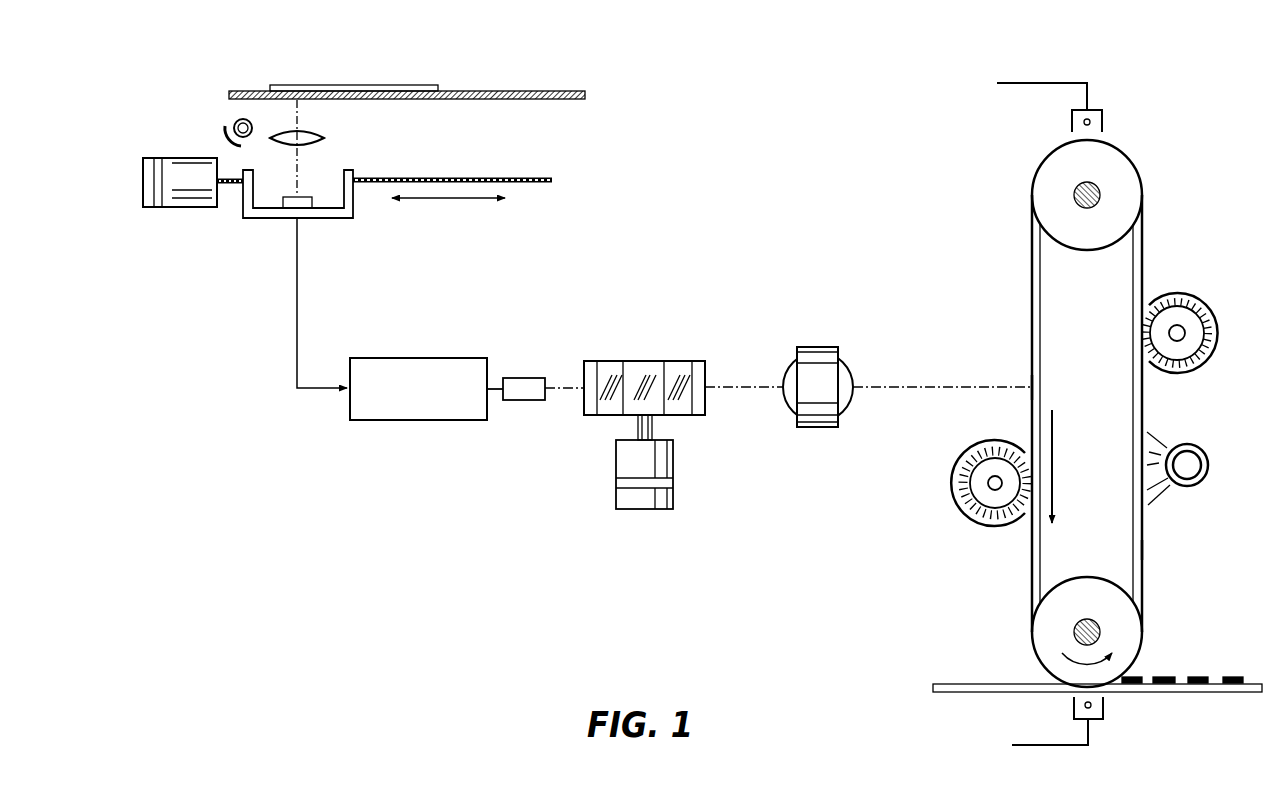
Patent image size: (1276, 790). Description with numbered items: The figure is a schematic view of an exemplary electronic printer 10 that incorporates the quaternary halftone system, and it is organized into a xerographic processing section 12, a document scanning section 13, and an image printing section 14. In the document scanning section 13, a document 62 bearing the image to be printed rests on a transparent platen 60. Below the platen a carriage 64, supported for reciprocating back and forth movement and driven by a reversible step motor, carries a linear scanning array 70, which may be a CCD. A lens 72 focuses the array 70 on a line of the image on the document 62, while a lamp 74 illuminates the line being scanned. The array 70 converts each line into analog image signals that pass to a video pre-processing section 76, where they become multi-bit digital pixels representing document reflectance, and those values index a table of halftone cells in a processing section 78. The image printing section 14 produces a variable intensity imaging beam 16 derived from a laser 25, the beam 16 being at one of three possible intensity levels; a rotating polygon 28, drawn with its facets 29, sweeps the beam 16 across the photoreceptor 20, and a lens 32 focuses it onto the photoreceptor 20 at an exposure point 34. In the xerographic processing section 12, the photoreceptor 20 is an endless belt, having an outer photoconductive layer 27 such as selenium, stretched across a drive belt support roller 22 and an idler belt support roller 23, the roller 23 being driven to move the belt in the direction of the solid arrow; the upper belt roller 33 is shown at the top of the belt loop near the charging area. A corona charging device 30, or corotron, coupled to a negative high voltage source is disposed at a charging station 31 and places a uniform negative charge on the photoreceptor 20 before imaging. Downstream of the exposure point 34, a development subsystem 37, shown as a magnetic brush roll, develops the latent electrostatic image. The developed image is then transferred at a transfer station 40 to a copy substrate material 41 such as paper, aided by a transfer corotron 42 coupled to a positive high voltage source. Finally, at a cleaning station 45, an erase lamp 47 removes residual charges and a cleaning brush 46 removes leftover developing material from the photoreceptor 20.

The electronic printer 10 is at (790, 93).
The xerographic processing section 12 is at (1023, 258).
The document scanning section 13 is at (492, 78).
The image printing section 14 is at (663, 305).
The imaging beam 16 is at (930, 385).
The photoreceptor 20 is at (1152, 220).
The drive belt support roller 22 is at (1087, 247).
The idler belt support roller 23 is at (1083, 578).
The laser 25 is at (528, 378).
The photoconductive layer 27 is at (1140, 552).
The rotating polygon 28 is at (628, 360).
The filters 29 is at (653, 365).
The corona charging device 30 is at (1095, 107).
The charging station 31 is at (1117, 112).
The lens 32 is at (817, 347).
The upper roller 33 is at (1065, 216).
The exposure point 34 is at (1030, 386).
The development subsystem 37 is at (953, 470).
The transfer station 40 is at (1140, 665).
The copy substrate material 41 is at (970, 685).
The transfer corotron 42 is at (1105, 708).
The cleaning station 45 is at (1157, 412).
The cleaning brush 46 is at (1212, 300).
The erase lamp 47 is at (1205, 452).
The transparent platen 60 is at (497, 100).
The document 62 is at (330, 84).
The carriage 64 is at (253, 218).
The linear scanning array 70 is at (303, 196).
The lens 72 is at (313, 133).
The lamp 74 is at (235, 118).
The video pre-processing section 76 is at (402, 412).
The processing section 78 is at (380, 420).